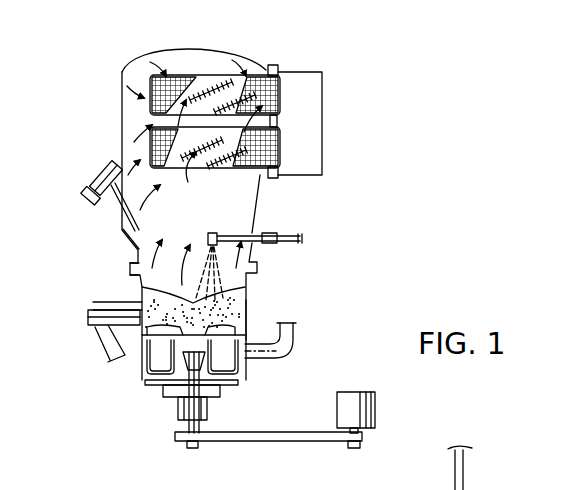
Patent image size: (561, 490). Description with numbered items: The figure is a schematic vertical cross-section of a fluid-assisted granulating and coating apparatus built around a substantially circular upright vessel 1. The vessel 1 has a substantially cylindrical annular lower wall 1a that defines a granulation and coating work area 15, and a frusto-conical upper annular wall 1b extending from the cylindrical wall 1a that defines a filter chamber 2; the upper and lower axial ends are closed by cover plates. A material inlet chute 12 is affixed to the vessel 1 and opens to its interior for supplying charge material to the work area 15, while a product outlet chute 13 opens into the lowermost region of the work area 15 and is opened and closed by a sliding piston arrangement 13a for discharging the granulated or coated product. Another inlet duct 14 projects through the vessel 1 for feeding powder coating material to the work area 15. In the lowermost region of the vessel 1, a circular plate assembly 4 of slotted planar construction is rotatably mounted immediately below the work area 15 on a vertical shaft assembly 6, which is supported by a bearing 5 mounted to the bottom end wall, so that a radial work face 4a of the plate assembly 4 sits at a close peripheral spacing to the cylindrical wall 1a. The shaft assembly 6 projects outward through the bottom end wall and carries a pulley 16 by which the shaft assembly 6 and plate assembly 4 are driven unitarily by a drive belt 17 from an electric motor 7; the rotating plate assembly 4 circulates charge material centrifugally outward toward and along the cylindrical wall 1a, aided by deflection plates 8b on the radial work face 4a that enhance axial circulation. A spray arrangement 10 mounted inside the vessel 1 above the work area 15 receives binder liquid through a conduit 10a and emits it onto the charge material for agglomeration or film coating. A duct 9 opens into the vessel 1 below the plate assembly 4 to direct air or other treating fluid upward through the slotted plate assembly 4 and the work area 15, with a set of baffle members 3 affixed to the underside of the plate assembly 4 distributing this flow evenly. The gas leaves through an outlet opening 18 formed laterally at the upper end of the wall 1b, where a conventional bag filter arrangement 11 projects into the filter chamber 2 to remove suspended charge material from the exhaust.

The vessel 1 is at (142, 302).
The cylindrical annular lower wall 1a is at (247, 318).
The frusto-conical upper annular wall 1b is at (253, 215).
The filter chamber 2 is at (138, 248).
The baffle members 3 is at (156, 360).
The circular plate assembly 4 is at (234, 350).
The radial work face 4a is at (123, 368).
The bearing 5 is at (203, 405).
The vertical shaft assembly 6 is at (180, 413).
The electric motor 7 is at (338, 412).
The deflection plates 8b is at (248, 298).
The duct 9 is at (280, 358).
The spray arrangement 10 is at (208, 239).
The conduit 10a is at (297, 243).
The bag filter arrangement 11 is at (225, 85).
The material inlet chute 12 is at (103, 172).
The product outlet chute 13 is at (106, 345).
The sliding piston arrangement 13a is at (93, 312).
The inlet duct 14 is at (130, 270).
The granulation and coating work area 15 is at (93, 303).
The pulley 16 is at (175, 440).
The drive belt 17 is at (280, 442).
The outlet opening 18 is at (276, 174).